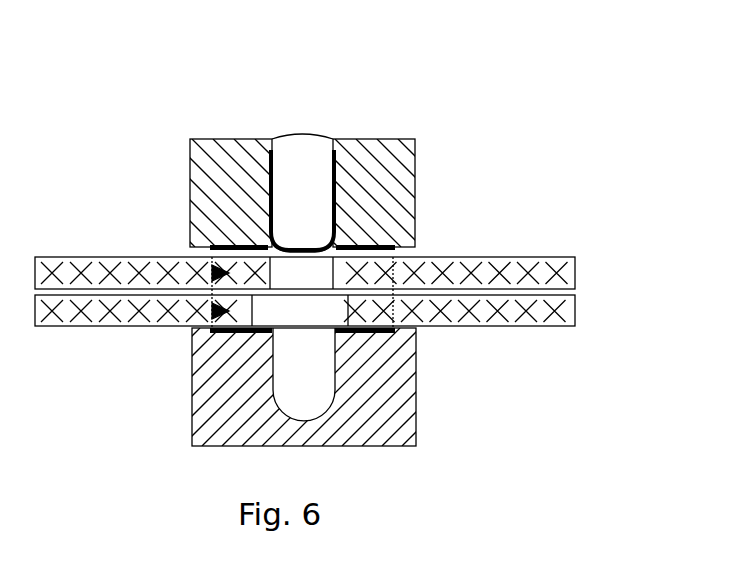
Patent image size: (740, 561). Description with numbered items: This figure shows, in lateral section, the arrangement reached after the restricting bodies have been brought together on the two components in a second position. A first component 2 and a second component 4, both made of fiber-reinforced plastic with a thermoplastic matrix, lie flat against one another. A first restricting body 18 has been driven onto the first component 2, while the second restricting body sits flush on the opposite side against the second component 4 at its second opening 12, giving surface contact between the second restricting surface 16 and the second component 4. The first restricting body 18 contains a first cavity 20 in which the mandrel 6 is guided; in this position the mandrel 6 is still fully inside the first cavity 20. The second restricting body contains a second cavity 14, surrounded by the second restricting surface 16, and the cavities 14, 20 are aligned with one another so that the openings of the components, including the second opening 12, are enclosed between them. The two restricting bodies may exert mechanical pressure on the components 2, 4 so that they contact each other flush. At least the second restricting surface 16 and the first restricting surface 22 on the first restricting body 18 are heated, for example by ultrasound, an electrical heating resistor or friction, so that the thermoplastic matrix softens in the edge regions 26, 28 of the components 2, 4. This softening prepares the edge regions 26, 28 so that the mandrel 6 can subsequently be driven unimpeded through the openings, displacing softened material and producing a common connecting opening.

The first component 2 is at (545, 268).
The second component 4 is at (535, 313).
The mandrel 6 is at (302, 163).
The second opening 12 is at (327, 305).
The second cavity 14 is at (293, 391).
The second restricting surface 16 is at (223, 335).
The first restricting body 18 is at (393, 158).
The first cavity 20 is at (407, 242).
The first restricting surface 22 is at (227, 247).
The edge region 26 is at (208, 273).
The edge region 28 is at (205, 310).